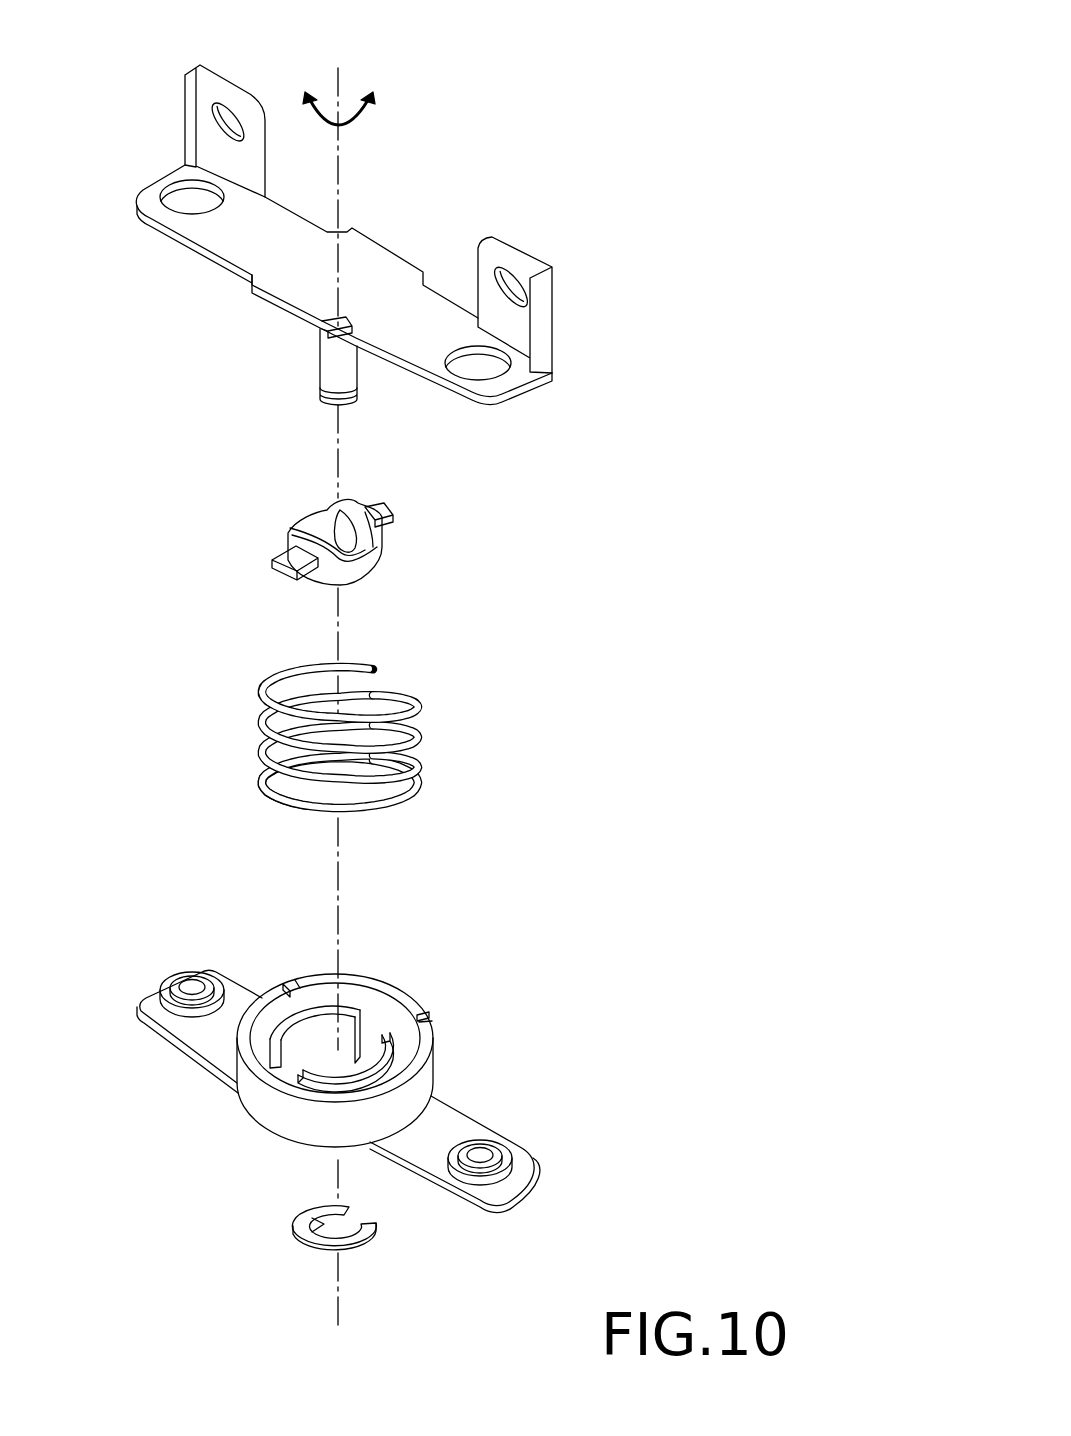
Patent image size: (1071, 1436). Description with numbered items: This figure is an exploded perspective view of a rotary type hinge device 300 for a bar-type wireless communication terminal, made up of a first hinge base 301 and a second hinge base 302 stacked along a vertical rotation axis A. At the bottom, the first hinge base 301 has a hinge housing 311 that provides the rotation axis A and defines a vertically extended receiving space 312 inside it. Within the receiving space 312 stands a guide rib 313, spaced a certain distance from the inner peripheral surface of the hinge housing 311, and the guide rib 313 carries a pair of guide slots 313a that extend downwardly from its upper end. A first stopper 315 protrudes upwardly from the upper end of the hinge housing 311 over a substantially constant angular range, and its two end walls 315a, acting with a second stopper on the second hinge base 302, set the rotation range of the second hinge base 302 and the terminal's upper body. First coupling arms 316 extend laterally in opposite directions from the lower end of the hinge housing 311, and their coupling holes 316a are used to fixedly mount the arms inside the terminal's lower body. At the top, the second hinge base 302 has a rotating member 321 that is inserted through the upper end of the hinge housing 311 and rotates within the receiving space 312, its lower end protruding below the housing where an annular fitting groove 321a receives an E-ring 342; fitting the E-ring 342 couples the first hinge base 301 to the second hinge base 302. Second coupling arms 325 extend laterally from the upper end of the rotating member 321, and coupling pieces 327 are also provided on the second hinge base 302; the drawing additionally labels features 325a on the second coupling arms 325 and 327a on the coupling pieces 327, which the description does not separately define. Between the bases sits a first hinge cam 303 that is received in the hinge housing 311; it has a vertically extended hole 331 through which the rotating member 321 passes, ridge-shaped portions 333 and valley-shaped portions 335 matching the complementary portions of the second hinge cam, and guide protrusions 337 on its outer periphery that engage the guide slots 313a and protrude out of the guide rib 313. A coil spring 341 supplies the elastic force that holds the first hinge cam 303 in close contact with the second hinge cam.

The rotary type hinge device 300 is at (651, 43).
The first hinge base 301 is at (267, 1138).
The second hinge base 302 is at (572, 264).
The first hinge cam 303 is at (414, 521).
The hinge housing 311 is at (245, 1092).
The receiving space 312 is at (317, 1030).
The guide rib 313 is at (342, 992).
The guide slots 313a is at (385, 1012).
The first stopper 315 is at (367, 985).
The end walls 315a is at (300, 984).
The first coupling arms 316 is at (205, 1036).
The coupling holes 316a is at (197, 990).
The rotating member 321 is at (327, 361).
The annular fitting groove 321a is at (317, 401).
The second coupling arms 325 is at (291, 222).
The bracket holes 325a is at (181, 200).
The coupling pieces 327 is at (188, 97).
The tab holes 327a is at (232, 116).
The vertically extended hole 331 is at (365, 536).
The ridge-shaped portions 333 is at (346, 513).
The valley-shaped portions 335 is at (312, 534).
The guide protrusions 337 is at (387, 502).
The coil spring 341 is at (428, 703).
The E-ring 342 is at (292, 1243).
The rotation axis A is at (342, 85).